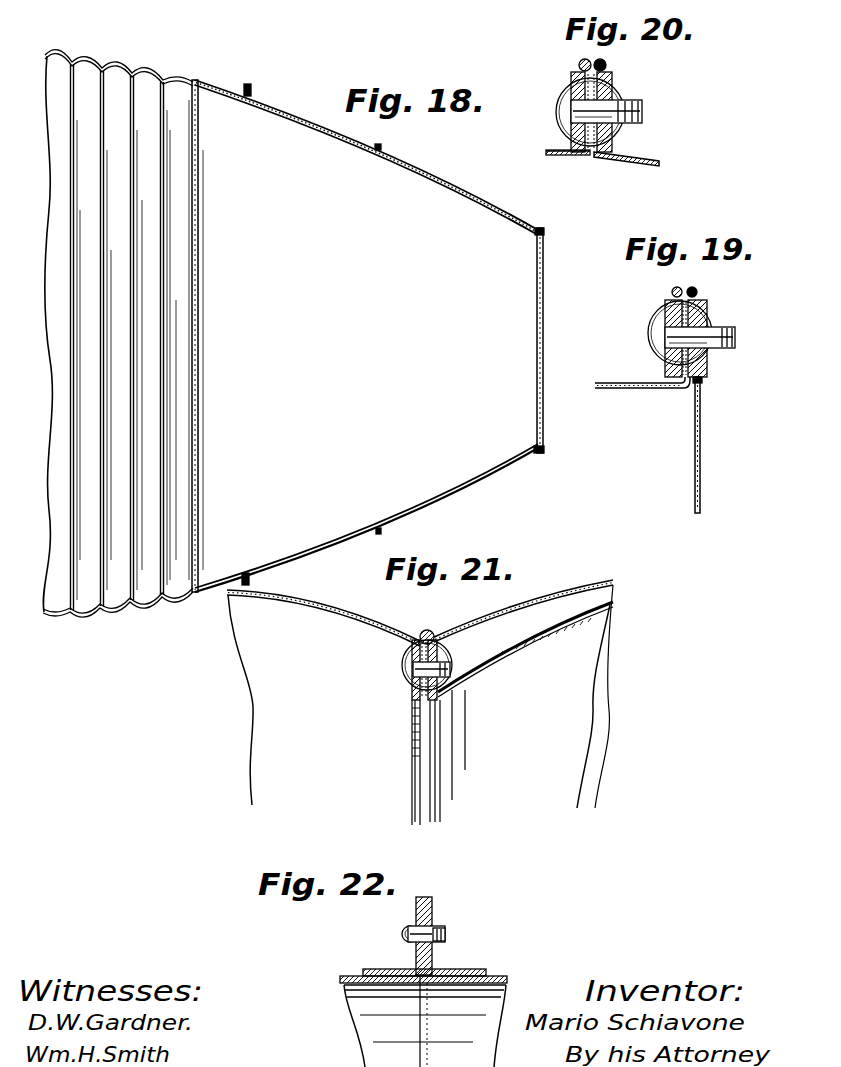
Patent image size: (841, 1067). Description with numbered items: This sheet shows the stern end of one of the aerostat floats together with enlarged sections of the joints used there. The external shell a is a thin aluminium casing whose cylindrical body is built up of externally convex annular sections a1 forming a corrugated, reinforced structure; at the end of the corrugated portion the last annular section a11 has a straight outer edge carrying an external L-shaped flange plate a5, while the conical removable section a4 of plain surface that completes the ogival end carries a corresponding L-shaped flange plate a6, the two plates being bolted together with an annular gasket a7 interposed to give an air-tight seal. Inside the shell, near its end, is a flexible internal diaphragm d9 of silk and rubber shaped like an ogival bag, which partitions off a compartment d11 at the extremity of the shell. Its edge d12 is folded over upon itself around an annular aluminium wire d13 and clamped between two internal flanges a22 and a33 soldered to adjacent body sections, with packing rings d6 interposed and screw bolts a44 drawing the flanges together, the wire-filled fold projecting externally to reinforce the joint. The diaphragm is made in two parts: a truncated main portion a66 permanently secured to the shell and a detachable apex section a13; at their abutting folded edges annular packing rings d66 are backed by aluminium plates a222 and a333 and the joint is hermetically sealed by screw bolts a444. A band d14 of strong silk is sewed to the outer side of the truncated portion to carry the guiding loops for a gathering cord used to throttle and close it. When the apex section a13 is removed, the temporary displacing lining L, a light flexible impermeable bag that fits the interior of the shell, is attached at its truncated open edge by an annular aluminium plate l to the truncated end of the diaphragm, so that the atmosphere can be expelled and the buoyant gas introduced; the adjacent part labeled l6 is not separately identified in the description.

In FIG. 18, the external shell a is at (123, 322).
In FIG. 18, the annular sections a1 is at (146, 311).
In FIG. 21, the annular sections a1 is at (323, 697).
In FIG. 18, the last annular sections a11 is at (365, 325).
In FIG. 22, the last annular sections a11 is at (404, 967).
In FIG. 18, the temporary lining L is at (308, 157).
In FIG. 19, the temporary lining L is at (613, 403).
In FIG. 18, the zone or band d14 is at (396, 137).
In FIG. 18, the internal diaphragm d9 is at (421, 343).
In FIG. 20, the internal diaphragm d9 is at (565, 156).
In FIG. 19, the internal diaphragm d9 is at (642, 374).
In FIG. 21, the internal diaphragm d9 is at (525, 649).
In FIG. 18, the lining edge l6 is at (537, 236).
In FIG. 19, the lining edge l6 is at (687, 398).
In FIG. 18, the annular plate l is at (543, 340).
In FIG. 19, the annular plate l is at (703, 445).
In FIG. 20, the annular plate a222 is at (571, 80).
In FIG. 19, the annular plate a222 is at (665, 305).
In FIG. 20, the annular plate a333 is at (613, 77).
In FIG. 19, the annular plate a333 is at (708, 300).
In FIG. 20, the screw bolts a444 is at (643, 111).
In FIG. 19, the screw bolts a444 is at (720, 339).
In FIG. 20, the annular packing rings d66 is at (612, 150).
In FIG. 19, the annular packing rings d66 is at (707, 372).
In FIG. 20, the apex section a13 is at (627, 168).
In FIG. 21, the compartment d11 is at (523, 611).
In FIG. 21, the edge of the diaphragm d12 is at (424, 632).
In FIG. 21, the annular wire d13 is at (432, 632).
In FIG. 21, the internal flange a22 is at (412, 652).
In FIG. 21, the internal flange a33 is at (438, 648).
In FIG. 21, the screw bolts a44 is at (412, 672).
In FIG. 21, the packing rings d6 is at (437, 693).
In FIG. 21, the truncated main portion a66 is at (579, 696).
In FIG. 22, the annular gasket a7 is at (424, 897).
In FIG. 22, the L-shaped flange plate a5 is at (399, 924).
In FIG. 22, the L-shaped flange plate a6 is at (433, 919).
In FIG. 22, the removable section a4 is at (436, 1010).